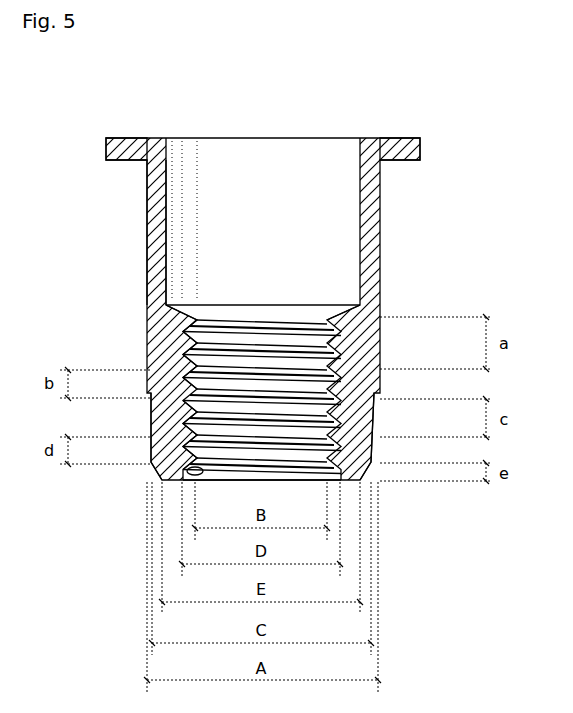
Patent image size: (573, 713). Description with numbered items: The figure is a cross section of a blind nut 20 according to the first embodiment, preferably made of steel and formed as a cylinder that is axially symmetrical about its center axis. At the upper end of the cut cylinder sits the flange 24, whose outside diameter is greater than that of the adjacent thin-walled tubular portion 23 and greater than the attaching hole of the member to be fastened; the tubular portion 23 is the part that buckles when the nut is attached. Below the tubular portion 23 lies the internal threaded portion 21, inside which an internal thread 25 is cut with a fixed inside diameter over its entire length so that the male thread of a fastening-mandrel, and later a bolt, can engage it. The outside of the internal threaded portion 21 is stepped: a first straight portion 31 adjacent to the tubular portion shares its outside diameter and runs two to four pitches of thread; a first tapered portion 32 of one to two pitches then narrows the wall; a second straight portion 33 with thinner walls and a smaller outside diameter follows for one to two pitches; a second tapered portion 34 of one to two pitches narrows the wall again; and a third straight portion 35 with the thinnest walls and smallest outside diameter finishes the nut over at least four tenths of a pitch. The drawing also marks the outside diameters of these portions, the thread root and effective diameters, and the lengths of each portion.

The blind nut 20 is at (381, 128).
The internal threaded portion 21 is at (150, 350).
The tubular portion 23 is at (160, 232).
The flange 24 is at (126, 150).
The internal thread 25 is at (150, 413).
The first straight portion 31 is at (380, 346).
The first tapered portion 32 is at (375, 389).
The second straight portion 33 is at (376, 421).
The second tapered portion 34 is at (376, 456).
The third straight portion 35 is at (373, 467).